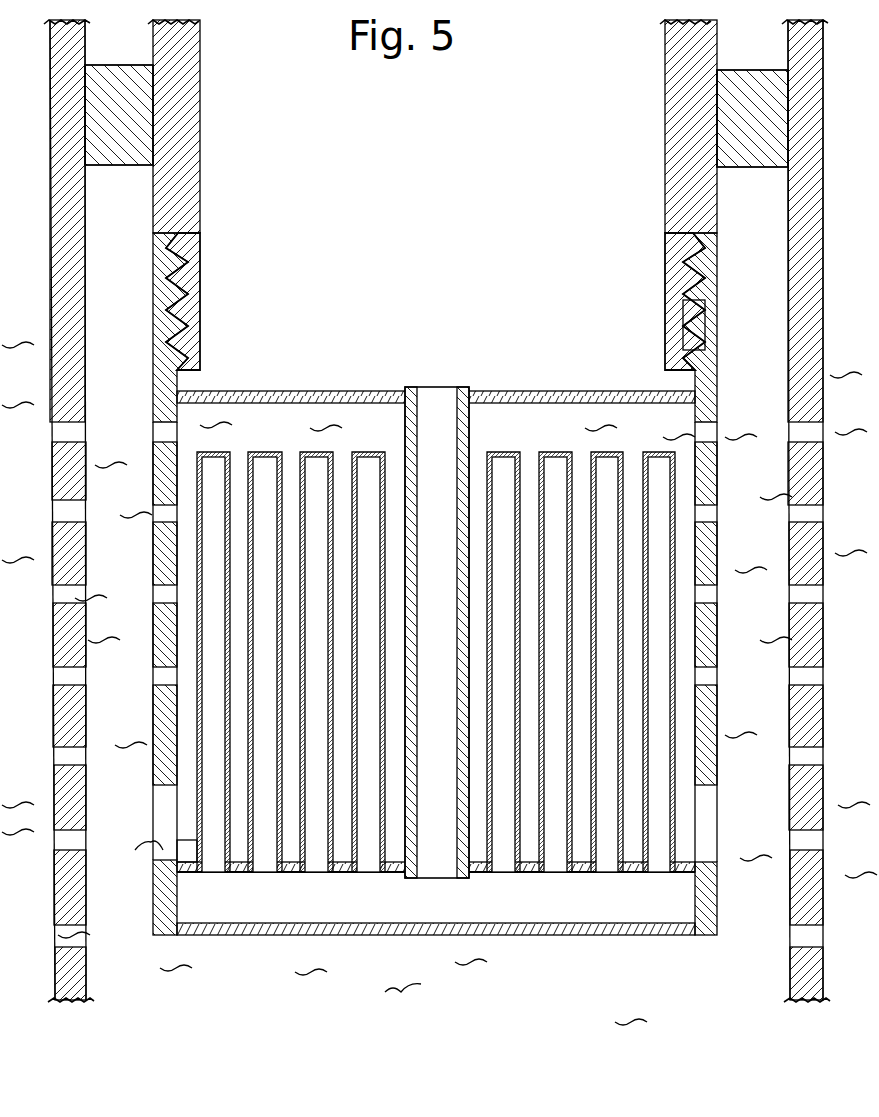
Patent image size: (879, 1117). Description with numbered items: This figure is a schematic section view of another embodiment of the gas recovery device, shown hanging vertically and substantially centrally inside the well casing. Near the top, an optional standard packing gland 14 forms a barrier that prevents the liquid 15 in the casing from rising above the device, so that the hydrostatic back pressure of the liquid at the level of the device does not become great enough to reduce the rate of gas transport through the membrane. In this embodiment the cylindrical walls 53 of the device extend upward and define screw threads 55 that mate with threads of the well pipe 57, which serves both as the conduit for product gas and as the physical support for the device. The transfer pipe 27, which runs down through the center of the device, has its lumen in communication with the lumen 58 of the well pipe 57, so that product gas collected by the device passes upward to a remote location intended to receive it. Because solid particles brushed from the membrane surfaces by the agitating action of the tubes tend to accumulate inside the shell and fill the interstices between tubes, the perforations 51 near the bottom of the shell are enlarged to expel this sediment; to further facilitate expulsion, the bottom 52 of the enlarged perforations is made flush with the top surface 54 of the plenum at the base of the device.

The packing gland 14 is at (724, 137).
The liquid 15 is at (395, 995).
The transfer pipe 27 is at (405, 428).
The perforations 51 is at (163, 802).
The bottom of the enlarged perforations 52 is at (418, 897).
The cylindrical walls 53 is at (717, 287).
The top surface of the plenum 54 is at (187, 860).
The screw threads 55 is at (665, 347).
The well pipe 57 is at (665, 283).
The lumen of well pipe 58 is at (488, 261).